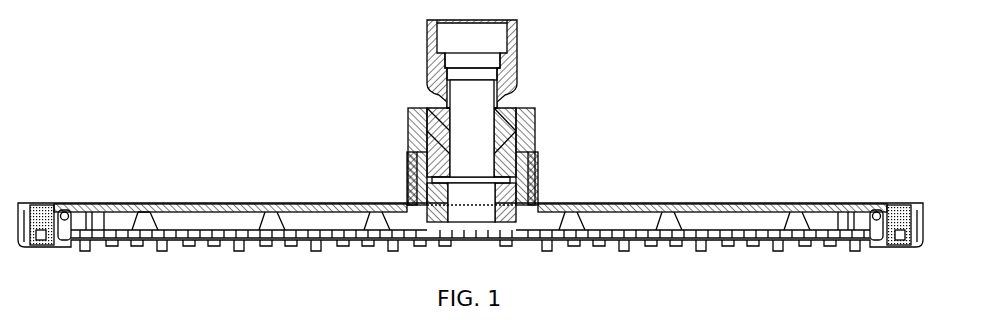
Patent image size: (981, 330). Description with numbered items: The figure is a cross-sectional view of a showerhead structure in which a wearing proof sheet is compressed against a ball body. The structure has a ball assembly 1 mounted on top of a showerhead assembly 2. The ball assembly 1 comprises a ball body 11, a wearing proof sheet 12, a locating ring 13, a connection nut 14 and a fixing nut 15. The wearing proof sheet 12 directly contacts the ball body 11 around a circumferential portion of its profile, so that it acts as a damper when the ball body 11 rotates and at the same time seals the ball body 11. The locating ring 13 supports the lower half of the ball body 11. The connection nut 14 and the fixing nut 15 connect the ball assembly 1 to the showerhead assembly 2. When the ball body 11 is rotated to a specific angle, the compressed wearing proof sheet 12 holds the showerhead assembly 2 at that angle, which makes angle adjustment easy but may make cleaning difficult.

The ball assembly 1 is at (404, 95).
The showerhead assembly 2 is at (284, 192).
The ball body 11 is at (520, 62).
The wearing proof sheet 12 is at (534, 120).
The locating ring 13 is at (537, 156).
The connection nut 14 is at (538, 186).
The fixing nut 15 is at (410, 199).